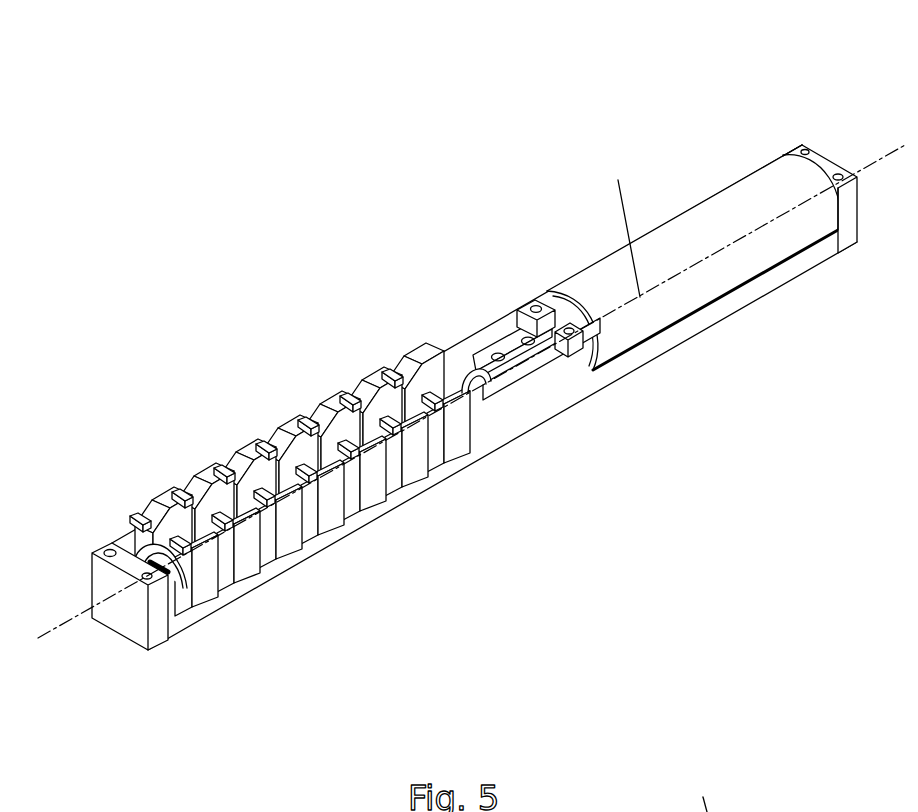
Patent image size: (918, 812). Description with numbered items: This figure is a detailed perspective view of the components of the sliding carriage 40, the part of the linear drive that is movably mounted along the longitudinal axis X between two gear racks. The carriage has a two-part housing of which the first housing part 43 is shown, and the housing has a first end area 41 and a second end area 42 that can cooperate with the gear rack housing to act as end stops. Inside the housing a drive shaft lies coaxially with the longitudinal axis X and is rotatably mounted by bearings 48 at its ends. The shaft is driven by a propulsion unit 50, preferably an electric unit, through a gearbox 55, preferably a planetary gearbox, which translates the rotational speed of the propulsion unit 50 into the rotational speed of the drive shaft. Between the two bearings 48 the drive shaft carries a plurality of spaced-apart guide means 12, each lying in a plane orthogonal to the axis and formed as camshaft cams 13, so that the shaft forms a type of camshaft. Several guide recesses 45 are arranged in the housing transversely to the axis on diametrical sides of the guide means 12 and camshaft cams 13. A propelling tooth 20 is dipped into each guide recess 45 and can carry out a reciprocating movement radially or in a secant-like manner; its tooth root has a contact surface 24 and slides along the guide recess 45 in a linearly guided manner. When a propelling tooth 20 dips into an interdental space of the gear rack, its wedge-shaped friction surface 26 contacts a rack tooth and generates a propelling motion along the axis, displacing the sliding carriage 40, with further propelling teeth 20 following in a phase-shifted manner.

The sliding carriage 40 is at (471, 362).
The first end area 41 is at (93, 588).
The second end area 42 is at (856, 152).
The first housing part 43 is at (550, 393).
The guide recess 45 is at (317, 480).
The bearing 48 is at (168, 583).
The propulsion unit 50 is at (715, 223).
The gearbox 55 is at (495, 340).
The propelling tooth 20 is at (278, 465).
The contact surface 24 is at (305, 478).
The friction surface 26 is at (270, 430).
The guide means 12 is at (375, 374).
The camshaft cam 13 is at (394, 413).